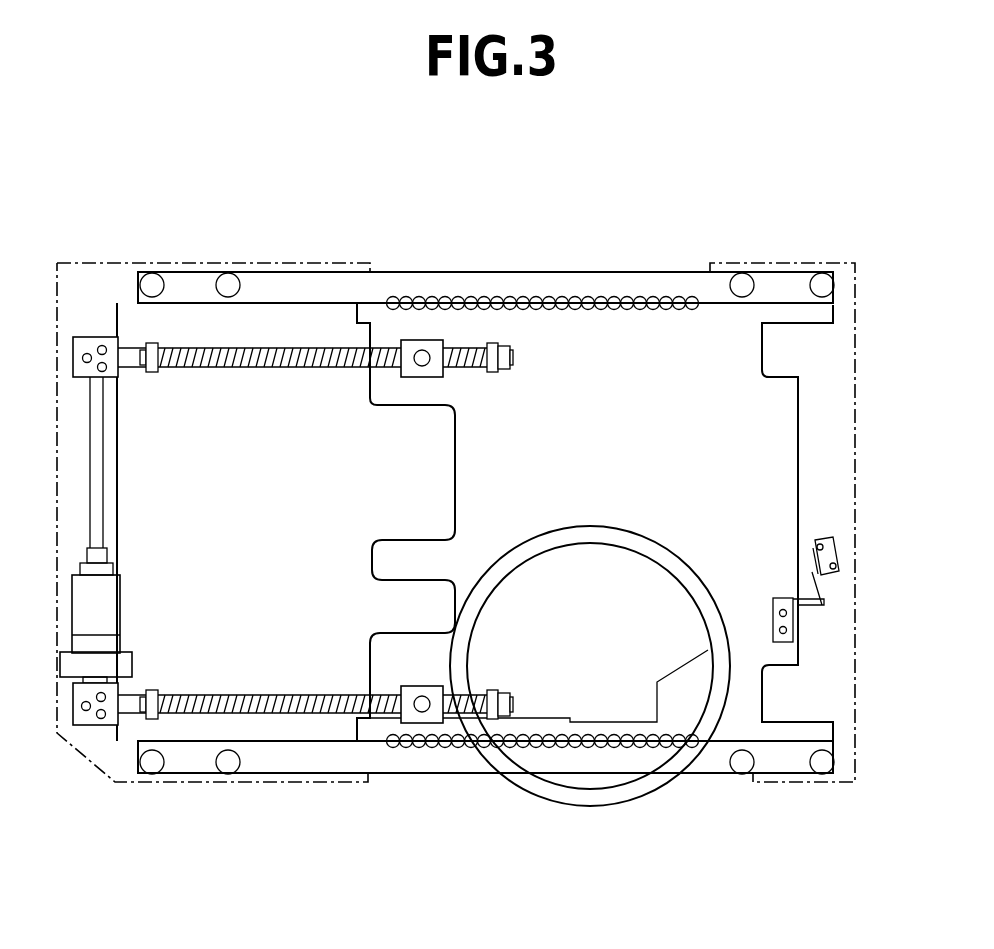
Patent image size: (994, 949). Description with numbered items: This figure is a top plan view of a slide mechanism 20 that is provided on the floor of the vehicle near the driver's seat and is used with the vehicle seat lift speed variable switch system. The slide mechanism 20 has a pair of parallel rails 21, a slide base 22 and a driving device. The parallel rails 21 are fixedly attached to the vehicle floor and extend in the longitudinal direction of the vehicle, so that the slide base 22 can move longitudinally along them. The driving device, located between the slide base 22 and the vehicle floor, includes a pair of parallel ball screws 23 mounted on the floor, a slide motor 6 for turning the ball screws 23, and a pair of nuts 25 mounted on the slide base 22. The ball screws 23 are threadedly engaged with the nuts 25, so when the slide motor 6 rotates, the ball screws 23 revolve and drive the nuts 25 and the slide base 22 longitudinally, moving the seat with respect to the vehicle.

The slide mechanism 20 is at (605, 248).
The parallel rails 21 is at (518, 290).
The slide base 22 is at (680, 436).
The ball screws 23 is at (300, 352).
The nuts 25 is at (438, 377).
The slide motor 6 is at (98, 600).